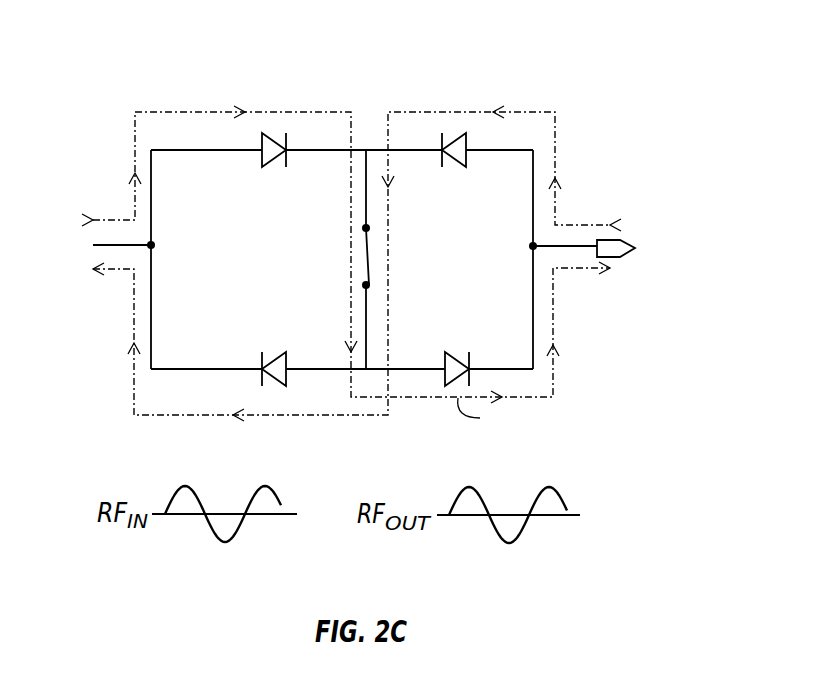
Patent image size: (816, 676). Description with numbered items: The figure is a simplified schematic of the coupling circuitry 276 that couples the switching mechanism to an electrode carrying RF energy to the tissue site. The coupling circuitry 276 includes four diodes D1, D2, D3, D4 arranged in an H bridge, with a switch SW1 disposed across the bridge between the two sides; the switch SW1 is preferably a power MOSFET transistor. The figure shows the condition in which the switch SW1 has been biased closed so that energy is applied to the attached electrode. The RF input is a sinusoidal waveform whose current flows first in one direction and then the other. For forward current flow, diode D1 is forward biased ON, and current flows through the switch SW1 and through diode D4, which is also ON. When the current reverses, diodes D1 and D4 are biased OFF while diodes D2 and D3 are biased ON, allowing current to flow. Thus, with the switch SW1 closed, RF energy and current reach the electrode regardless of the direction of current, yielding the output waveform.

The coupling circuitry 276 is at (160, 94).
The diode D1 is at (274, 169).
The diode D2 is at (456, 170).
The diode D3 is at (275, 349).
The diode D4 is at (457, 350).
The switch SW1 is at (331, 259).